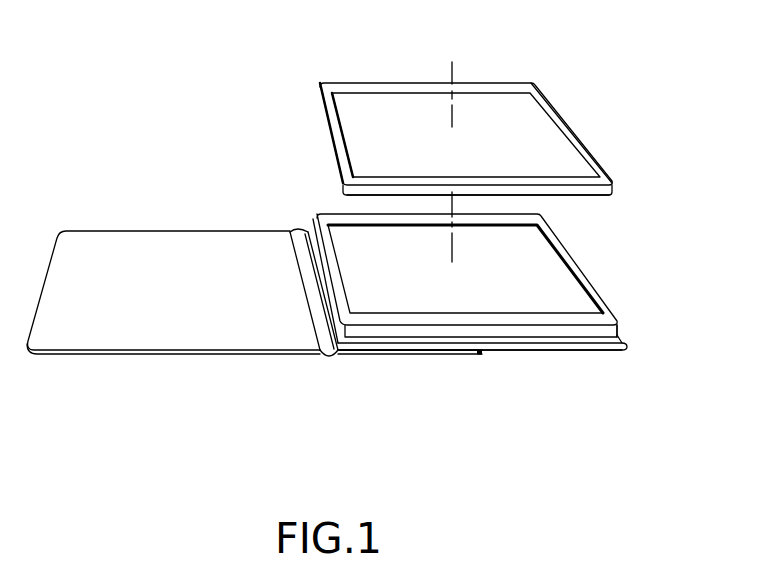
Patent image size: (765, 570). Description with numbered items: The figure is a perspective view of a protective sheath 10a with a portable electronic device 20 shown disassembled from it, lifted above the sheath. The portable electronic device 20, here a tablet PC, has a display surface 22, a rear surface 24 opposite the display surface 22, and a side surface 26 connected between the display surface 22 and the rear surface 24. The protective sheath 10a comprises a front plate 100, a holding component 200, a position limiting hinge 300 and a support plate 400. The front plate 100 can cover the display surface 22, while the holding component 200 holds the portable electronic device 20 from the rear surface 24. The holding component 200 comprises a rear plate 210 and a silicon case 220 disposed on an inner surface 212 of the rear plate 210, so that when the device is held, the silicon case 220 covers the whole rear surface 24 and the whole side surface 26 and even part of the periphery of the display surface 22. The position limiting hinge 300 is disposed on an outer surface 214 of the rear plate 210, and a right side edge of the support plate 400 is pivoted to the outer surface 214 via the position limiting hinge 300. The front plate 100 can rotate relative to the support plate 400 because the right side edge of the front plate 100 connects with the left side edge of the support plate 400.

The protective sheath 10a is at (268, 435).
The front plate 100 is at (298, 356).
The holding component 200 is at (520, 326).
The rear plate 210 is at (514, 348).
The inner surface 212 is at (622, 341).
The outer surface 214 is at (609, 350).
The silicon case 220 is at (580, 330).
The position limiting hinge 300 is at (480, 356).
The support plate 400 is at (405, 356).
The portable electronic device 20 is at (489, 130).
The display surface 22 is at (376, 104).
The rear surface 24 is at (596, 198).
The side surface 26 is at (578, 133).